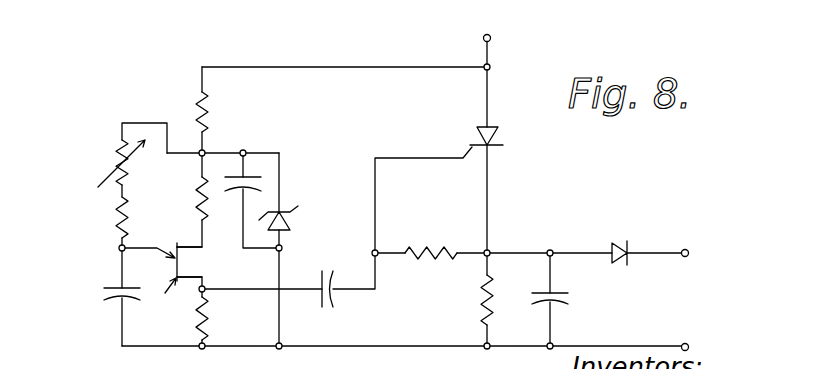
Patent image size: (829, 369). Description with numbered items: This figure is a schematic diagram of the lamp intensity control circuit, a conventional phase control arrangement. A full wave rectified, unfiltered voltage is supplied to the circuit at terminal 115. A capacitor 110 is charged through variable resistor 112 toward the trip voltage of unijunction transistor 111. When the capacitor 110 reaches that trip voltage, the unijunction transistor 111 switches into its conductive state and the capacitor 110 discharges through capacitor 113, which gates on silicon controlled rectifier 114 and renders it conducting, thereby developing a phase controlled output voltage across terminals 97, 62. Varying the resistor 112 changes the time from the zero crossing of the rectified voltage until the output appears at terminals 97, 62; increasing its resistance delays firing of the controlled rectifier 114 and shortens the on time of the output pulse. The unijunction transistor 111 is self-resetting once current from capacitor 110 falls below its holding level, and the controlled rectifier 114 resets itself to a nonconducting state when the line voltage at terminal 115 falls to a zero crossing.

The capacitor 110 is at (108, 286).
The unijunction transistor 111 is at (162, 280).
The variable resistor 112 is at (114, 157).
The capacitor 113 is at (323, 297).
The silicon controlled rectifier 114 is at (476, 135).
The terminal 115 is at (483, 39).
The terminal 97 is at (684, 257).
The terminal 62 is at (685, 343).